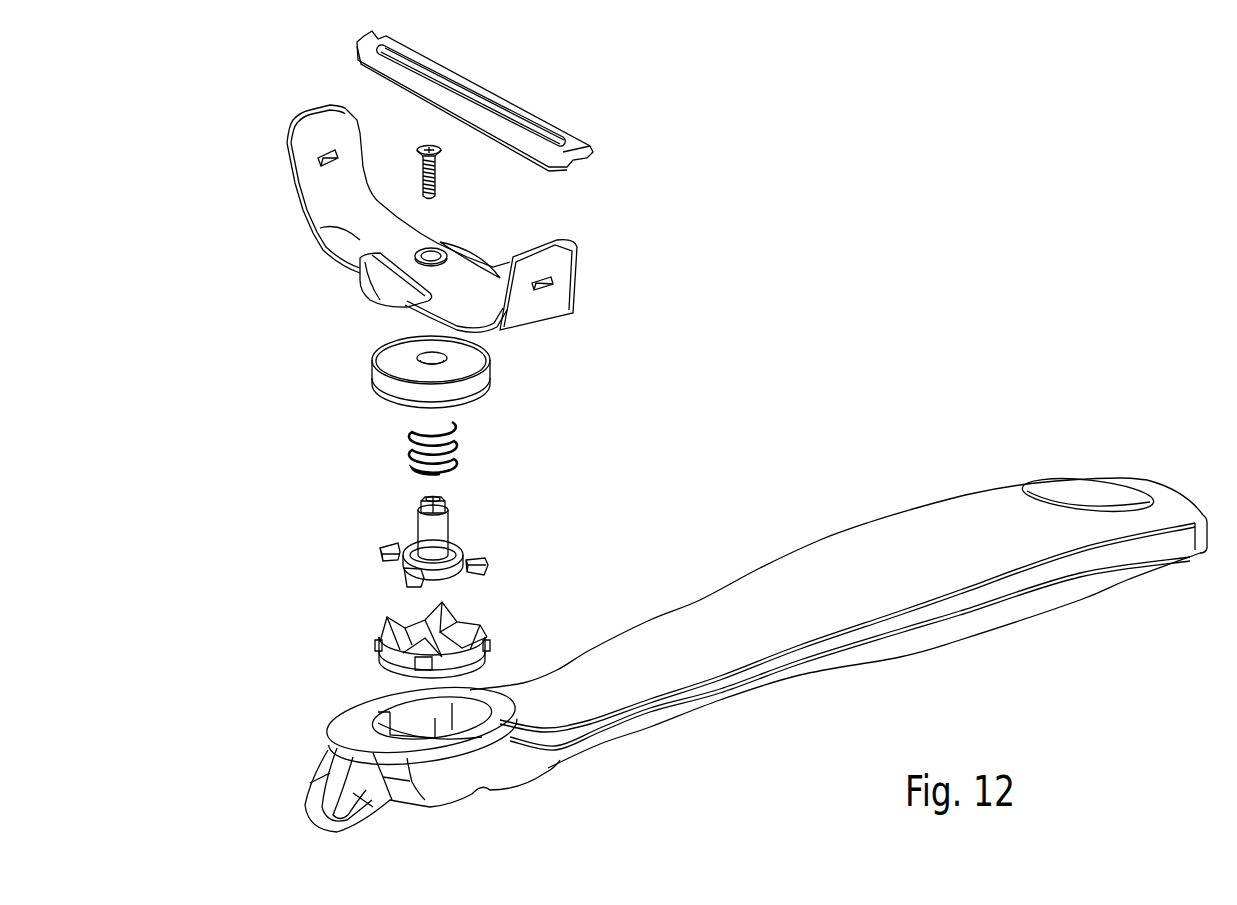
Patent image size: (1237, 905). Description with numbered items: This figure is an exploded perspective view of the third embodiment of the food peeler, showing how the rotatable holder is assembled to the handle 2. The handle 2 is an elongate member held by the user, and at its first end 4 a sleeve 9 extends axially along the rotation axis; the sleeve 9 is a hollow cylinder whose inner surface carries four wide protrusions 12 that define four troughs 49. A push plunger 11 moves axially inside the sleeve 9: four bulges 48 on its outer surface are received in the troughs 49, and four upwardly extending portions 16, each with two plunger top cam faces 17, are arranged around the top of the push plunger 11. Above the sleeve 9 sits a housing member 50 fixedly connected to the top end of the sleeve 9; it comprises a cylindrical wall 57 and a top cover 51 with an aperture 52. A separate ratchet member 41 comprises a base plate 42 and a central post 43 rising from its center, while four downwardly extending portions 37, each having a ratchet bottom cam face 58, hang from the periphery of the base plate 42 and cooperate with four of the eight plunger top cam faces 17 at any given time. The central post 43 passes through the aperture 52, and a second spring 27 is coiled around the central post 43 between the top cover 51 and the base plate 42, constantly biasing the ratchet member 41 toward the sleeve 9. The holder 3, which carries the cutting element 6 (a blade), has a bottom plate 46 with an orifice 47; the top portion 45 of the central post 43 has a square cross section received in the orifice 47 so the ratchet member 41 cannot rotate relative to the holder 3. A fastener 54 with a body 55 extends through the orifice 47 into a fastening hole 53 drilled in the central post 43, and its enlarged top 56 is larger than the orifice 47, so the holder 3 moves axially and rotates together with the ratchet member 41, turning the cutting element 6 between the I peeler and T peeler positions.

The handle 2 is at (730, 603).
The holder 3 is at (390, 218).
The first end 4 is at (443, 778).
The cutting element 6 is at (582, 148).
The sleeve 9 is at (332, 745).
The push plunger 11 is at (423, 627).
The protrusions 12 is at (372, 704).
The upwardly extending portions 16 is at (422, 649).
The plunger top cam faces 17 is at (450, 621).
The second spring 27 is at (455, 443).
The downwardly extending portions 37 is at (490, 566).
The ratchet member 41 is at (413, 526).
The base plate 42 is at (468, 549).
The central post 43 is at (430, 527).
The top portion 45 is at (447, 502).
The bottom plate 46 is at (323, 230).
The orifice 47 is at (360, 258).
The bulges 48 is at (484, 652).
The troughs 49 is at (442, 728).
The housing member 50 is at (439, 390).
The top cover 51 is at (467, 363).
The aperture 52 is at (417, 361).
The fastening hole 53 is at (427, 498).
The fastener 54 is at (436, 160).
The body 55 is at (436, 190).
The enlarged top 56 is at (440, 151).
The cylindrical wall 57 is at (485, 383).
The ratchet bottom cam faces 58 is at (422, 588).